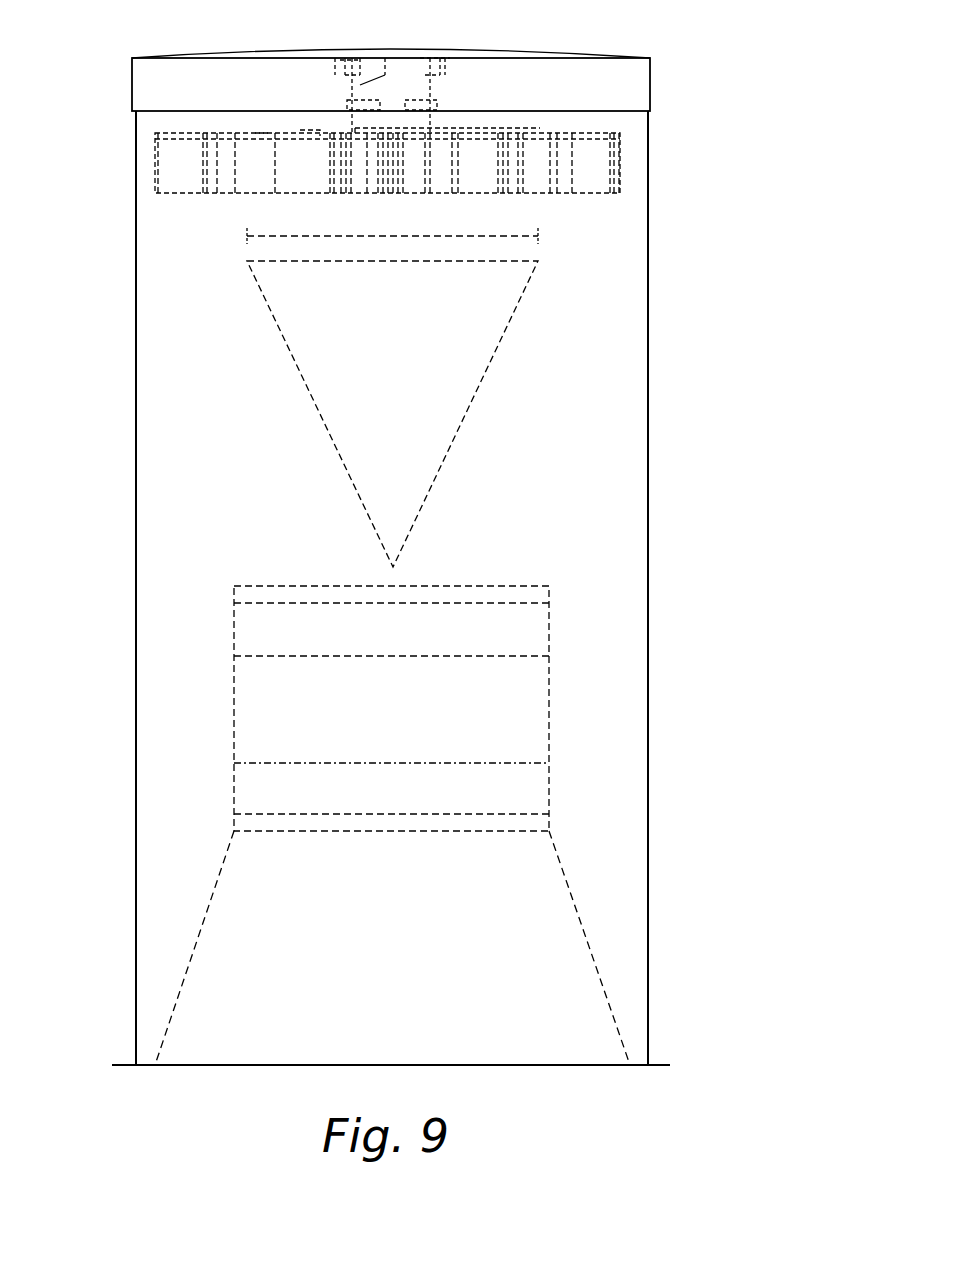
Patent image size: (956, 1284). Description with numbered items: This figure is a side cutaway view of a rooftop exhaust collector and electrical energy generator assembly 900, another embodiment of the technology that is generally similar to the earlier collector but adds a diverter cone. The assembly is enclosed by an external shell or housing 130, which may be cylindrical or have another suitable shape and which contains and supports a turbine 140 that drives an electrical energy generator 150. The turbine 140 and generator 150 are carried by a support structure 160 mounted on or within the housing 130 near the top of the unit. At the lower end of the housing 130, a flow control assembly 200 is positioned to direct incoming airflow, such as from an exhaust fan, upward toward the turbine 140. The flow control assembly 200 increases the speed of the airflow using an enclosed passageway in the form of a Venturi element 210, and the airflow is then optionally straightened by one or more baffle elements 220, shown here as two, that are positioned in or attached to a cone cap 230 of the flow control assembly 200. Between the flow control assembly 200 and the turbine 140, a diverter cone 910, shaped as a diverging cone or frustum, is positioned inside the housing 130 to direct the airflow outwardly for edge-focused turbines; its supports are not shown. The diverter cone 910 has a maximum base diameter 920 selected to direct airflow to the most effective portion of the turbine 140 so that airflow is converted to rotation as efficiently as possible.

The housing 130 is at (136, 618).
The turbine 140 is at (233, 115).
The electrical energy generator 150 is at (400, 78).
The support structure 160 is at (600, 87).
The flow control assembly 200 is at (192, 823).
The Venturi element 210 is at (612, 1017).
The baffle elements 220 is at (543, 625).
The cone cap 230 is at (543, 715).
The rooftop exhaust collector and electrical energy generator assembly 900 is at (690, 355).
The diverter cone 910 is at (297, 376).
The maximum base diameter 920 is at (437, 236).